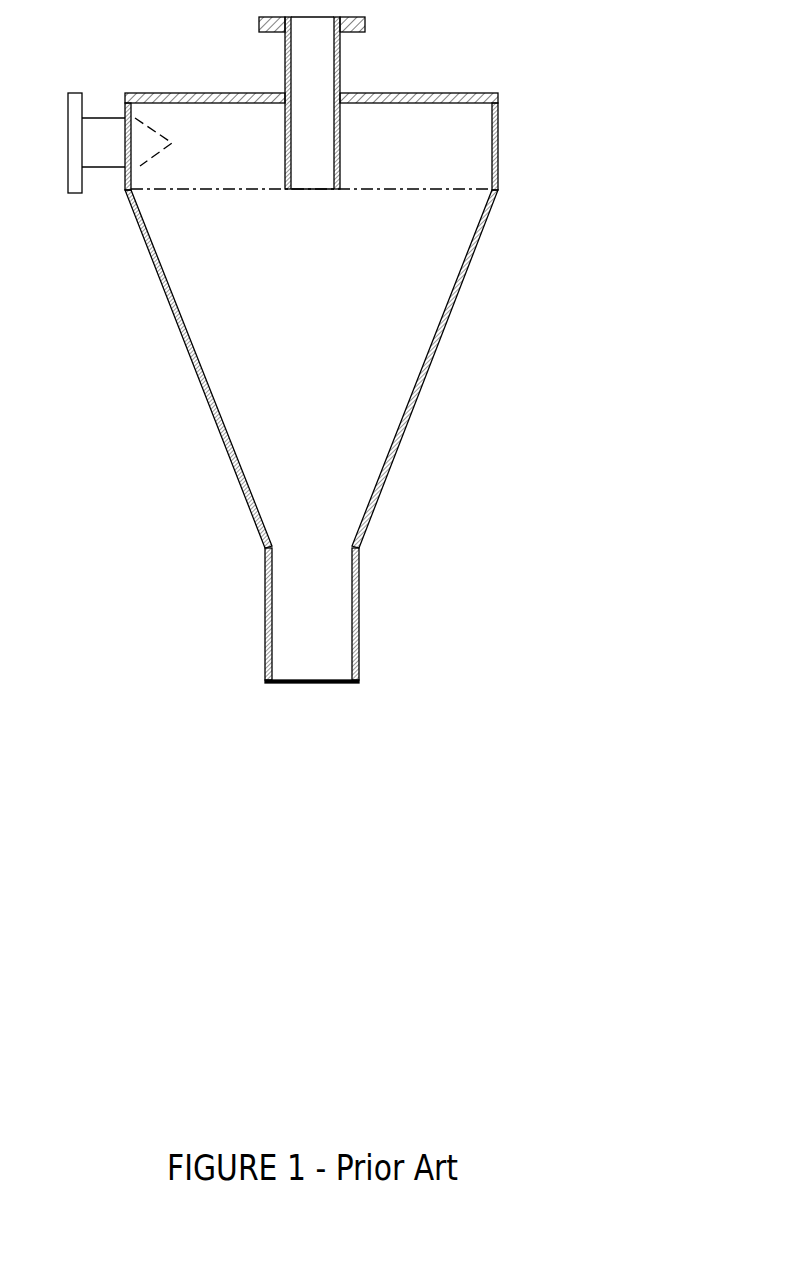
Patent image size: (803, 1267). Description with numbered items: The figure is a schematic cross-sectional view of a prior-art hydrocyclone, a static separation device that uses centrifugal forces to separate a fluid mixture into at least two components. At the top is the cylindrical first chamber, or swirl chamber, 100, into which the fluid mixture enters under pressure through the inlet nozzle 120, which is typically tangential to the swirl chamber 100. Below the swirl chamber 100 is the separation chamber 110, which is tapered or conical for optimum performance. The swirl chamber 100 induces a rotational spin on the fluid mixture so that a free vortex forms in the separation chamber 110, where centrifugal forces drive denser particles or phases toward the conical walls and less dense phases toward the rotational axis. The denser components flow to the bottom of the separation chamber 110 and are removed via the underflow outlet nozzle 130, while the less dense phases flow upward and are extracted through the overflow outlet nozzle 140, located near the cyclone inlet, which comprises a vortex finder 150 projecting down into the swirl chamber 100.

The cylindrical first chamber (swirl chamber) 100 is at (502, 143).
The separation chamber 110 is at (453, 310).
The inlet nozzle 120 is at (73, 198).
The underflow outlet nozzle 130 is at (370, 647).
The overflow outlet nozzle 140 is at (350, 50).
The vortex finder 150 is at (340, 173).